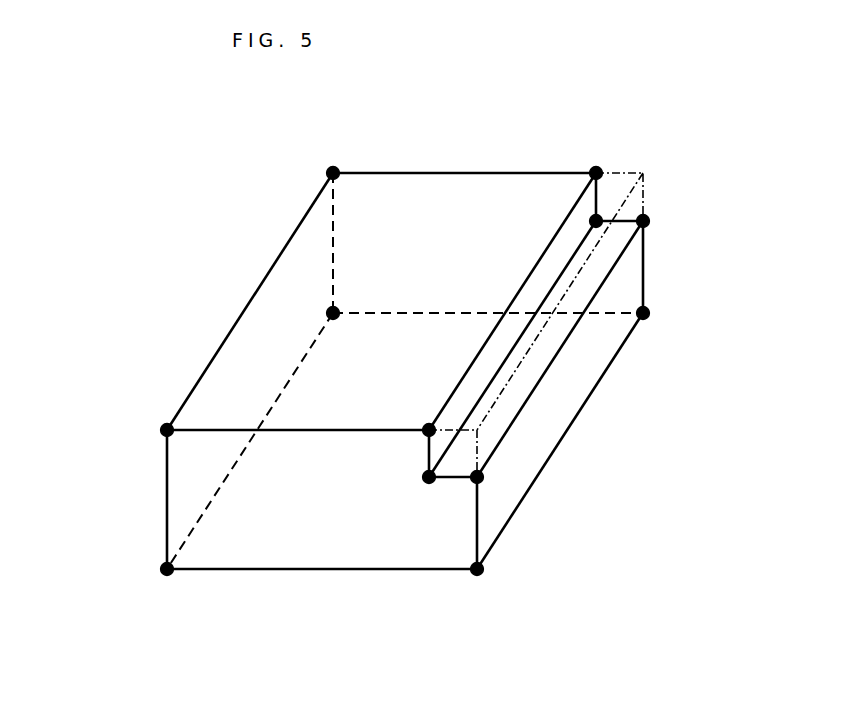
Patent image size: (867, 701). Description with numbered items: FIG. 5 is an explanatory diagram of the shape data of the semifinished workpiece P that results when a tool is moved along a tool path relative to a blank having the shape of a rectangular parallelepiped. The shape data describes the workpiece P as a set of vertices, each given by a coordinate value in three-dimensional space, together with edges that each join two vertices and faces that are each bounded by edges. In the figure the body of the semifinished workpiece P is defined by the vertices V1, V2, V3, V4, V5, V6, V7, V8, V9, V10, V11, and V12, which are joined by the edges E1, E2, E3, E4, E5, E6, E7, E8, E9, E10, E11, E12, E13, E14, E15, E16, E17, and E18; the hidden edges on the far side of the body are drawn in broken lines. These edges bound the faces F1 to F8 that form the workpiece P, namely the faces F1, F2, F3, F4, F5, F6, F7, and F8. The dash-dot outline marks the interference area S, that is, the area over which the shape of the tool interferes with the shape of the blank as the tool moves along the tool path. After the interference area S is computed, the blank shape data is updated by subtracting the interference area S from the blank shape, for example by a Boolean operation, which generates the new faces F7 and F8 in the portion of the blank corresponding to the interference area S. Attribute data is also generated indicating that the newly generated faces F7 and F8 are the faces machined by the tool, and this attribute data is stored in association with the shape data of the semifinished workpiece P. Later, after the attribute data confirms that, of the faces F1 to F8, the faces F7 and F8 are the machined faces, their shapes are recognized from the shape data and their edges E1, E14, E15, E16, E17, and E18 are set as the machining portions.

The semifinished workpiece P is at (160, 272).
The interference area S is at (535, 362).
The vertex V1 is at (598, 170).
The vertex V2 is at (428, 428).
The vertex V3 is at (166, 428).
The vertex V4 is at (331, 168).
The vertex V5 is at (645, 312).
The vertex V6 is at (478, 571).
The vertex V7 is at (166, 571).
The vertex V8 is at (332, 311).
The vertex V9 is at (598, 219).
The vertex V10 is at (428, 479).
The vertex V11 is at (480, 479).
The vertex V12 is at (645, 223).
The edge E1 is at (517, 297).
The edge E2 is at (287, 428).
The edge E3 is at (223, 338).
The edge E4 is at (462, 173).
The edge E5 is at (580, 415).
The edge E6 is at (287, 568).
The edge E7 is at (263, 420).
The edge E8 is at (371, 312).
The edge E9 is at (645, 287).
The edge E10 is at (477, 513).
The edge E11 is at (167, 497).
The edge E12 is at (333, 243).
The edge E13 is at (553, 287).
The edge E14 is at (525, 405).
The edge E15 is at (630, 219).
The edge E16 is at (457, 480).
The edge E17 is at (428, 455).
The edge E18 is at (598, 193).
The face F1 is at (380, 190).
The face F2 is at (358, 535).
The face F3 is at (590, 357).
The face F4 is at (257, 548).
The face F5 is at (267, 338).
The face F6 is at (535, 238).
The machined face F7 is at (478, 381).
The machined face F8 is at (557, 333).